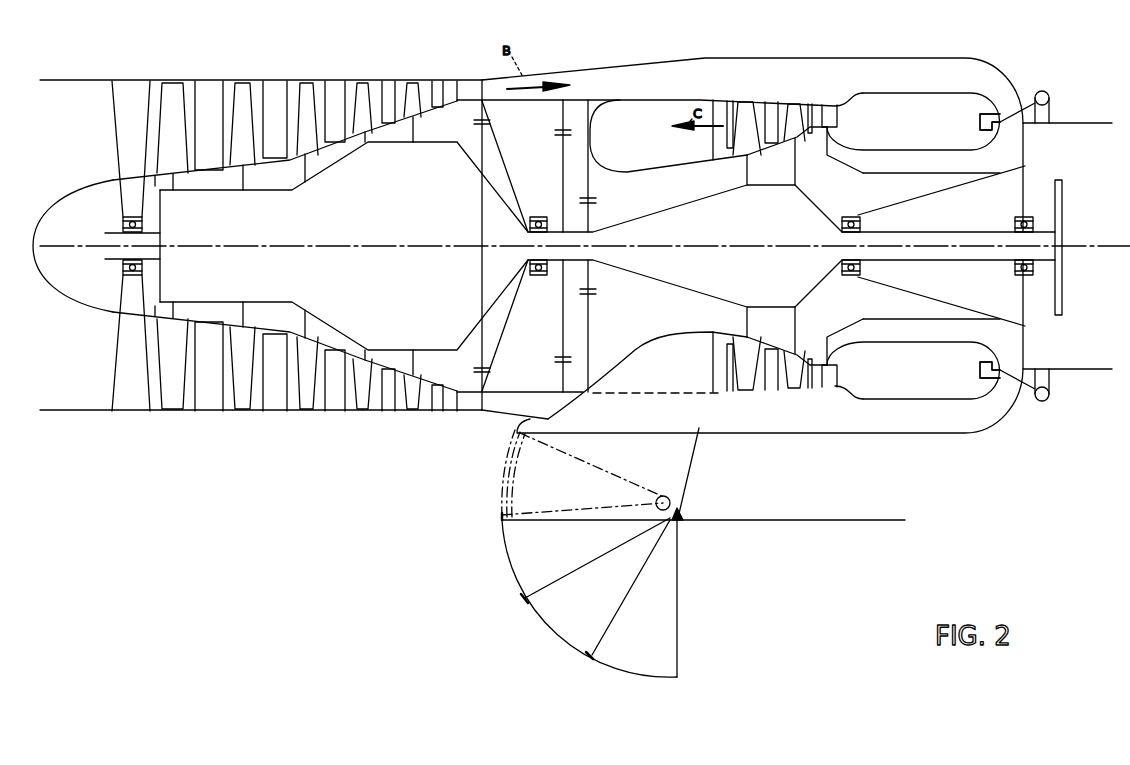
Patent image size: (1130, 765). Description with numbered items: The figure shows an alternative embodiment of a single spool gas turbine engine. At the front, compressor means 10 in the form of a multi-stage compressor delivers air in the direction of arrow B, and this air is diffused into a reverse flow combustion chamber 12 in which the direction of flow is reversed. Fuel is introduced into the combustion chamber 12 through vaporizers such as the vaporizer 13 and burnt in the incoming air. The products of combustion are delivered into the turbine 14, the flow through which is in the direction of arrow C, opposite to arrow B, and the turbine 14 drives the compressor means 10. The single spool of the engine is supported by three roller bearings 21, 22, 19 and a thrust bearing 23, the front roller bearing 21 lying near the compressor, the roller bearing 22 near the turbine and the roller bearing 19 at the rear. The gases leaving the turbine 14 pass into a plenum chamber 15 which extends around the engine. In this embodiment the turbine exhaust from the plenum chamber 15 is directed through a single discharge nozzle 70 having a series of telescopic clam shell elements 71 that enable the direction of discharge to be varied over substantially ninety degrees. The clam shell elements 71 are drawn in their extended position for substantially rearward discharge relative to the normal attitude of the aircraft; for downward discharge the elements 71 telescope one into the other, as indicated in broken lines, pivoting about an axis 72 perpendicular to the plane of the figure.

The compressor means 10 is at (261, 227).
The combustion chamber 12 is at (911, 92).
The vaporizer 13 is at (990, 110).
The turbine 14 is at (794, 92).
The plenum chamber 15 is at (626, 69).
The roller bearing 19 is at (1016, 216).
The roller bearing 21 is at (122, 223).
The roller bearing 22 is at (848, 213).
The thrust bearing 23 is at (537, 216).
The discharge nozzle 70 is at (523, 556).
The telescopic clam shell element 71 is at (657, 660).
The axis 72 is at (673, 500).